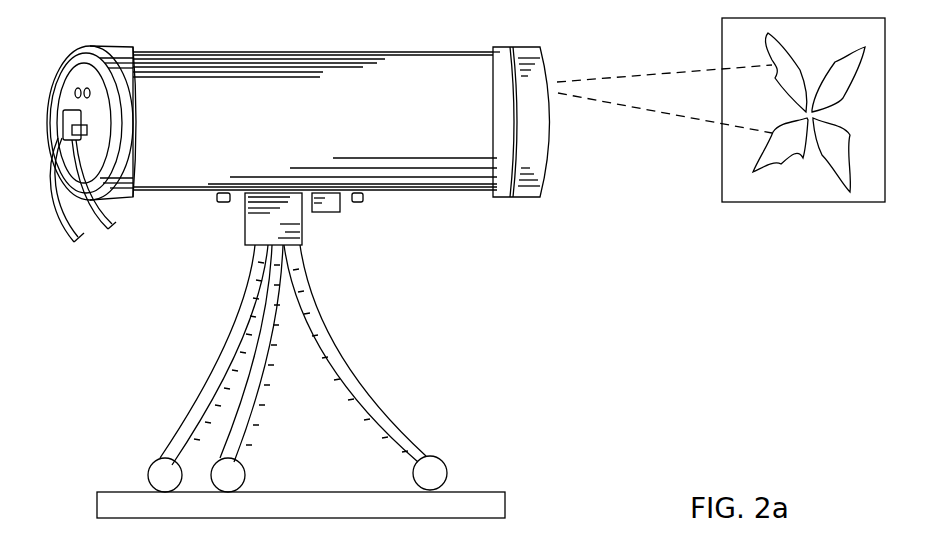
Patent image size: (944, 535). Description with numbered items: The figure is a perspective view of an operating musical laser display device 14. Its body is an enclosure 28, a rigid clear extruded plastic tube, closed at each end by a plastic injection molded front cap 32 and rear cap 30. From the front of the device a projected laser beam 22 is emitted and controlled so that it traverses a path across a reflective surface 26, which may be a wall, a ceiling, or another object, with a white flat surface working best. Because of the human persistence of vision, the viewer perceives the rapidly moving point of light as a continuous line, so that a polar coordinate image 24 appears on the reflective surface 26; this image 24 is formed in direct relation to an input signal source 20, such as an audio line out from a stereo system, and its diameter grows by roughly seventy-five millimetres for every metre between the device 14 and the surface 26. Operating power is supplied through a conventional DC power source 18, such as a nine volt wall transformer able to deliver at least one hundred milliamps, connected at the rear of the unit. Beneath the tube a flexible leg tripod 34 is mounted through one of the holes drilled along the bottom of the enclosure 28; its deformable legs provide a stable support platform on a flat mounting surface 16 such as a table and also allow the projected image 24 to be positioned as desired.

The musical laser display device 14 is at (570, 322).
The flat mounting surface 16 is at (507, 490).
The DC power source 18 is at (90, 210).
The input signal source 20 is at (63, 220).
The projected laser beam 22 is at (678, 117).
The polar coordinate image 24 is at (763, 172).
The reflective surface 26 is at (872, 192).
The enclosure 28 is at (383, 138).
The rear cap 30 is at (112, 152).
The front cap 32 is at (528, 163).
The flexible leg tripod 34 is at (372, 400).